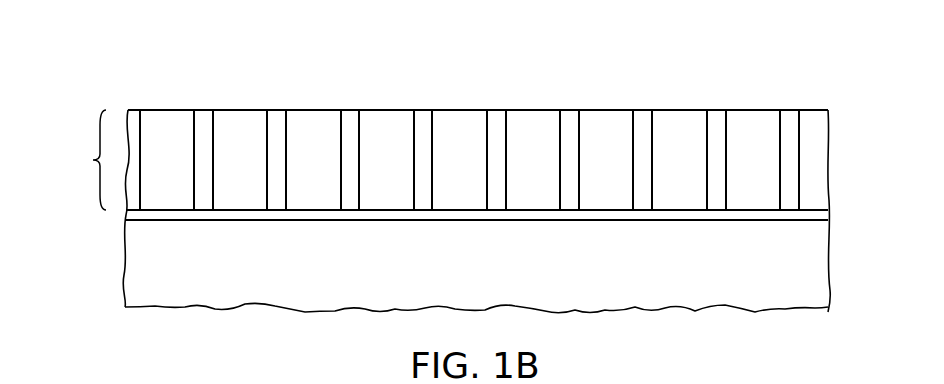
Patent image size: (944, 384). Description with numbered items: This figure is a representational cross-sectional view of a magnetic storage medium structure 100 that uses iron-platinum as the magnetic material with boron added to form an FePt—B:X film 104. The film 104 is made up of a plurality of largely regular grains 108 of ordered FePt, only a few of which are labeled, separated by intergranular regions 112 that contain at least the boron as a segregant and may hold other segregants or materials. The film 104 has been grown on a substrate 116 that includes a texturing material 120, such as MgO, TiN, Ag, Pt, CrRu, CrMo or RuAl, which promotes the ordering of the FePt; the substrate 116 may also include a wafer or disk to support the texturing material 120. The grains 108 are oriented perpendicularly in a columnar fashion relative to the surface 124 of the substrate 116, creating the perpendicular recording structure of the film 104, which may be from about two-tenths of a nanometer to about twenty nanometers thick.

The magnetic storage medium structure 100 is at (766, 47).
The FePt—B:X film 104 is at (77, 160).
The grains 108 is at (752, 123).
The intergranular regions 112 is at (790, 121).
The substrate 116 is at (122, 260).
The texturing material 120 is at (127, 214).
The surface 124 is at (805, 210).